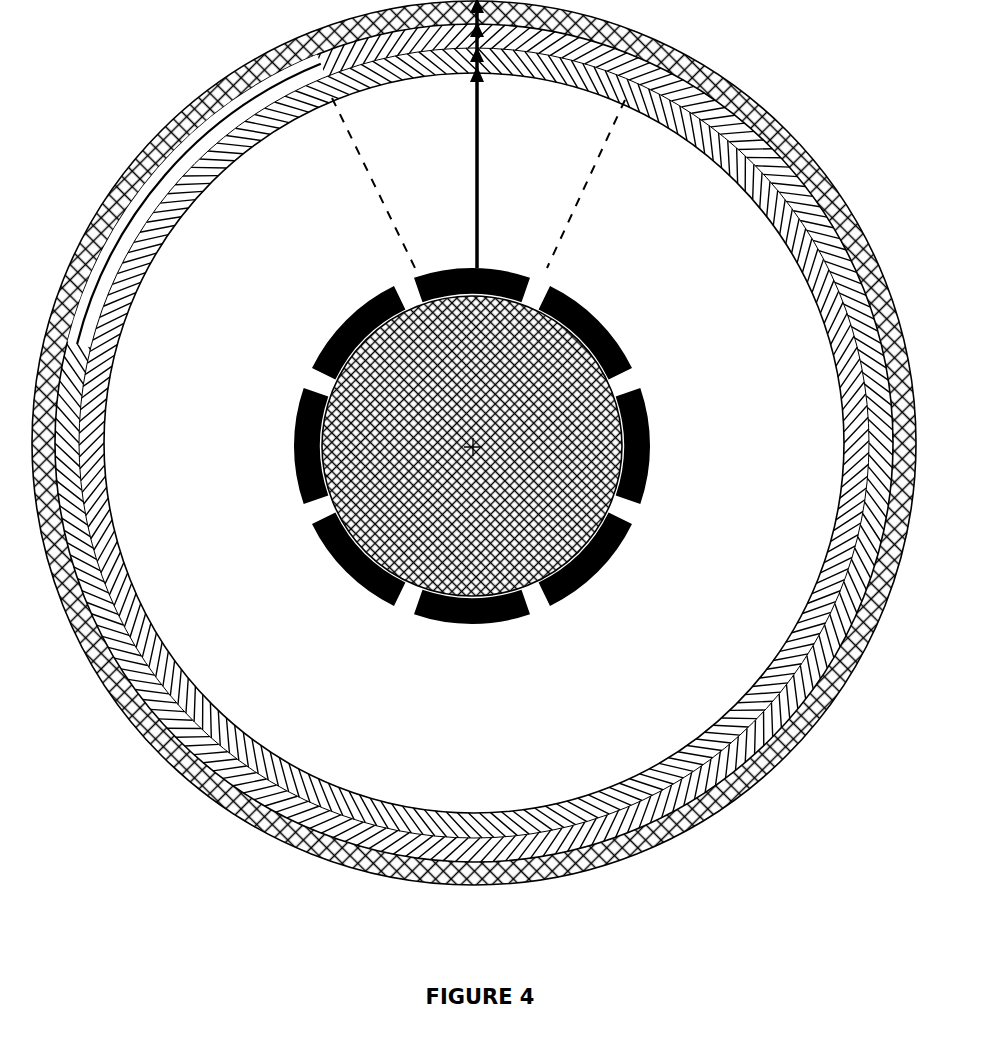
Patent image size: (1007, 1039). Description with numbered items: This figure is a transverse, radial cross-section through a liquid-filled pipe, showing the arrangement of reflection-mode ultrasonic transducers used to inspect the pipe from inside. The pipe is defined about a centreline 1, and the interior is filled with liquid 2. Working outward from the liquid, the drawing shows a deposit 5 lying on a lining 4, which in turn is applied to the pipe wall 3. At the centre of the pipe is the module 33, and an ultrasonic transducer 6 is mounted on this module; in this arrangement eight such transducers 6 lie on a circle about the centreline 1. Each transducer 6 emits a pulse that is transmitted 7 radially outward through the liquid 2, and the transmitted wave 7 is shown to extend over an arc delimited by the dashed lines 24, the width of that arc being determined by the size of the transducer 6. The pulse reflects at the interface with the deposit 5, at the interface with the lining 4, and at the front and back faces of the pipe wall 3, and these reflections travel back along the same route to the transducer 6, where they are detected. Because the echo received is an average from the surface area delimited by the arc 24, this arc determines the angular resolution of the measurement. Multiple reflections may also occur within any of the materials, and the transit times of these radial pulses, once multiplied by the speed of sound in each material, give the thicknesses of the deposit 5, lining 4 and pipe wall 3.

The centreline 1 is at (478, 452).
The liquid 2 is at (221, 487).
The pipe wall 3 is at (153, 147).
The lining 4 is at (132, 210).
The deposit 5 is at (168, 218).
The ultrasonic transducer 6 is at (513, 270).
The transmitted wave 7 is at (478, 93).
The dashed lines 24 is at (363, 158).
The module 33 is at (612, 470).